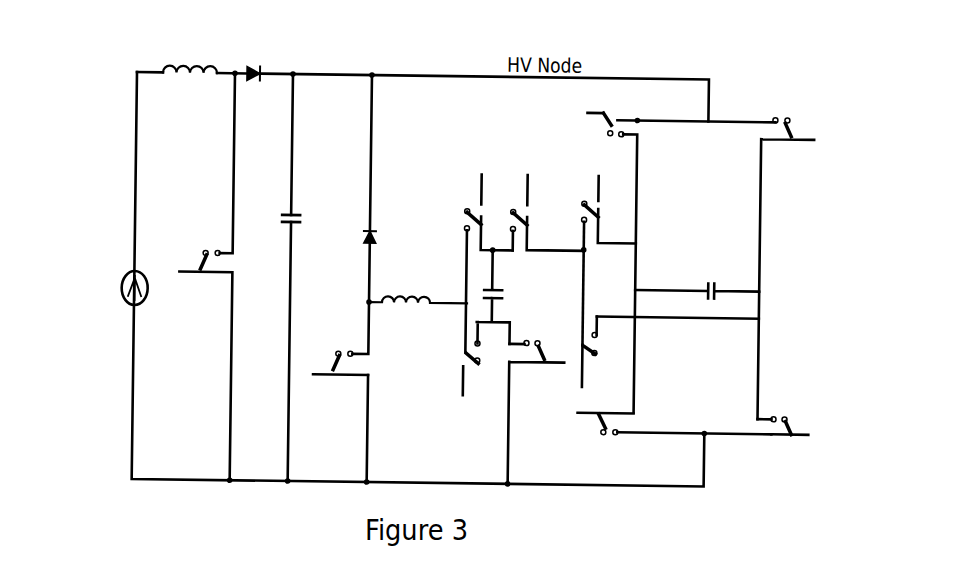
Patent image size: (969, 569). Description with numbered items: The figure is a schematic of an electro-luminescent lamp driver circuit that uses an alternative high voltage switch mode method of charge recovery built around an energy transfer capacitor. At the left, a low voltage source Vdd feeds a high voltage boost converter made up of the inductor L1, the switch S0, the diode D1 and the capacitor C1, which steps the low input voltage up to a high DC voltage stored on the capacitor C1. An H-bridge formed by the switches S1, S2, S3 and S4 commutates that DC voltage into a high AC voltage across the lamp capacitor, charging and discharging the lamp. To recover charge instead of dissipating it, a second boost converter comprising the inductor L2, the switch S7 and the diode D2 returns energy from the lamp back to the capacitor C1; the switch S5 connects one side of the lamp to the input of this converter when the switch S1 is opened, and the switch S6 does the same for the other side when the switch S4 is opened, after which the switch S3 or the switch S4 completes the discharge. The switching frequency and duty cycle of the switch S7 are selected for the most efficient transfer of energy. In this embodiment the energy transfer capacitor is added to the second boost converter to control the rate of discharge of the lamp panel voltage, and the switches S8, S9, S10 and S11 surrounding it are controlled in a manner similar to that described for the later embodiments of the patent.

The low voltage source Vdd is at (81, 270).
The inductor L1 is at (188, 49).
The diode D1 is at (262, 53).
The switch S0 is at (206, 277).
The capacitor C1 is at (280, 232).
The diode D2 is at (355, 236).
The inductor L2 is at (418, 279).
The switch S7 is at (341, 345).
The switch S10 is at (473, 263).
The switch S8 is at (543, 213).
The switch S5 is at (597, 260).
The switch S1 is at (675, 264).
The switch S2 is at (786, 251).
The switch S11 is at (451, 367).
The switch S9 is at (536, 412).
The switch S6 is at (593, 351).
The switch S3 is at (674, 433).
The switch S4 is at (783, 407).